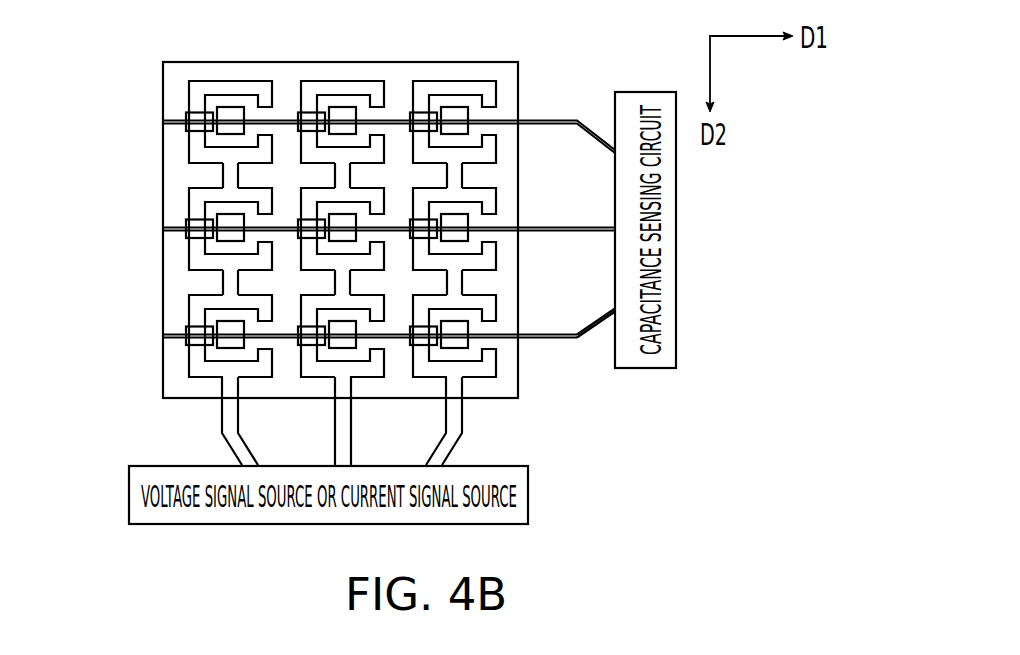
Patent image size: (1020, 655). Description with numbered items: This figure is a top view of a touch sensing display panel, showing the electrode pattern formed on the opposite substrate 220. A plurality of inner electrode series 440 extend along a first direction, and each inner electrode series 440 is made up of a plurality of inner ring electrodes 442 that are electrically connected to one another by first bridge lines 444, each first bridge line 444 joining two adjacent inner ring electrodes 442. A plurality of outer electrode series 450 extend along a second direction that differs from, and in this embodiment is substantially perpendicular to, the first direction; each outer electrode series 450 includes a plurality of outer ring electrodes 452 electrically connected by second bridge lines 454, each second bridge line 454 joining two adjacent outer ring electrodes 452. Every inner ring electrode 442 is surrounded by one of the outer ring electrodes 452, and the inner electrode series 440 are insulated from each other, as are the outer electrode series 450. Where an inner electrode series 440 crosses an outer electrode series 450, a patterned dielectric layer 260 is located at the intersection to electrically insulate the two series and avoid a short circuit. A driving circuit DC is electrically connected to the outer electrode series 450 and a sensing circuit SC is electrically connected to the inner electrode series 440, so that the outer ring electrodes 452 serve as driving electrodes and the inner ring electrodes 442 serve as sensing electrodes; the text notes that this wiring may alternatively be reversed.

The opposite substrate 220 is at (495, 400).
The patterned dielectric layer 260 is at (187, 127).
The inner electrode series 440 is at (349, 216).
The inner ring electrode 442 is at (232, 113).
The first bridge line 444 is at (282, 120).
The outer electrode series 450 is at (319, 239).
The outer ring electrode 452 is at (237, 88).
The second bridge line 454 is at (232, 174).
The sensing circuit SC is at (597, 322).
The driving circuit DC is at (450, 452).